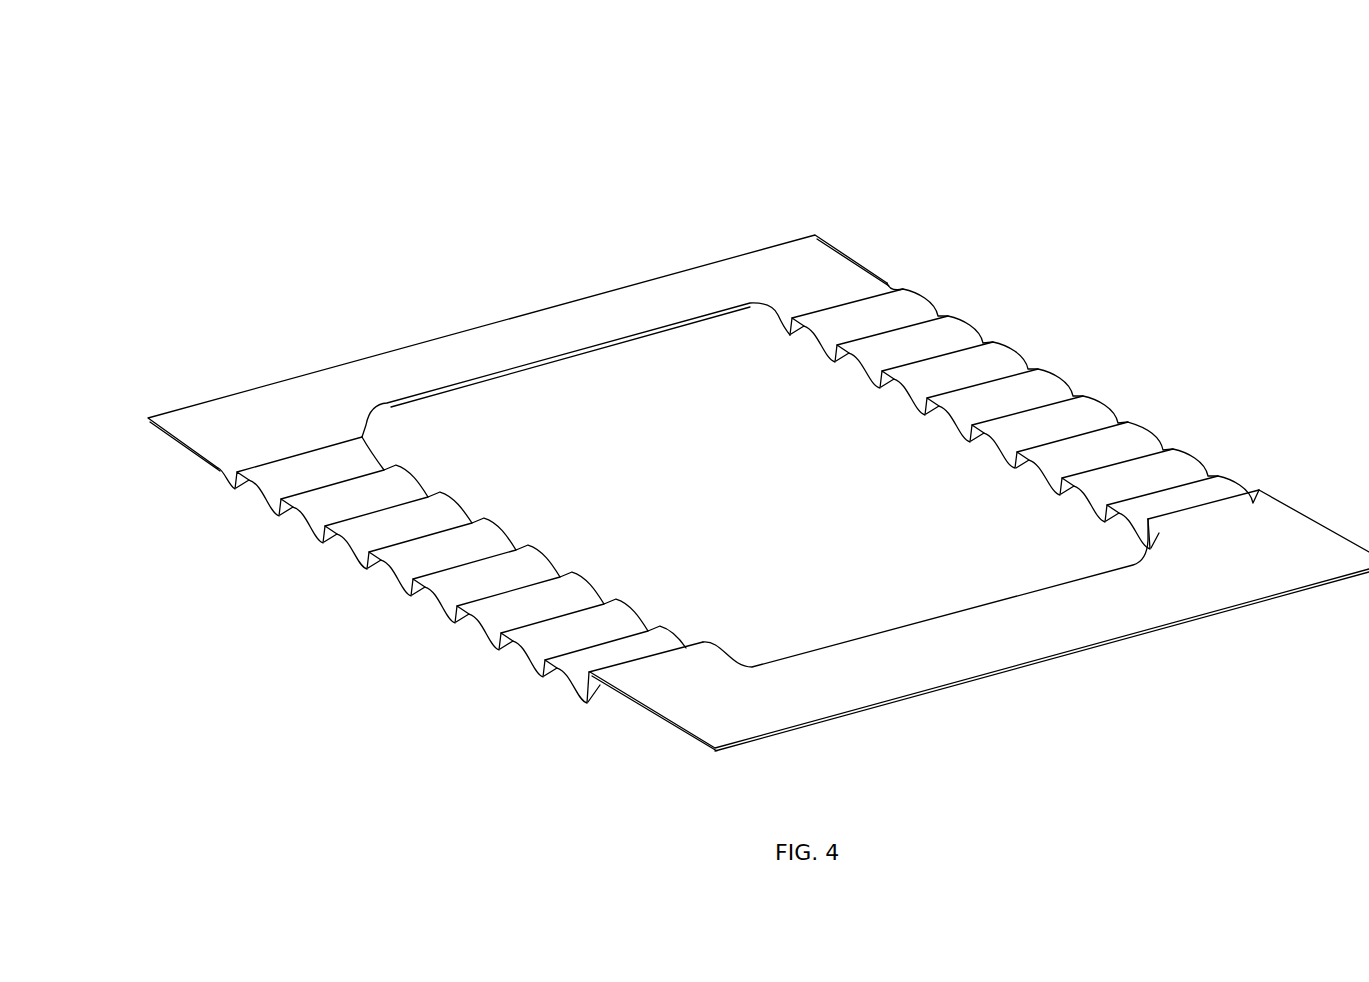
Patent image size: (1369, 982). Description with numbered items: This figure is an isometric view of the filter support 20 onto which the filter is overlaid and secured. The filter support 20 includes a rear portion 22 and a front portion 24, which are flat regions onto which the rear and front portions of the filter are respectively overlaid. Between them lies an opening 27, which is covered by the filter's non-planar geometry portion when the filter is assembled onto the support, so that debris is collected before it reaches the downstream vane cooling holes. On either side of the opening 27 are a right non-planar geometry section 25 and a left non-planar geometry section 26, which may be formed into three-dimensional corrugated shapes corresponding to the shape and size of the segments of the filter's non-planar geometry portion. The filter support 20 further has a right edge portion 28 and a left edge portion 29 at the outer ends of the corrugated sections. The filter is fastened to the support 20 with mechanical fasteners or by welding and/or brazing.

The filter support 20 is at (1050, 105).
The rear portion 22 is at (470, 340).
The front portion 24 is at (1012, 637).
The right non-planar geometry section 25 is at (995, 352).
The left non-planar geometry section 26 is at (405, 551).
The opening 27 is at (722, 395).
The right edge portion 28 is at (1138, 428).
The left edge portion 29 is at (516, 643).